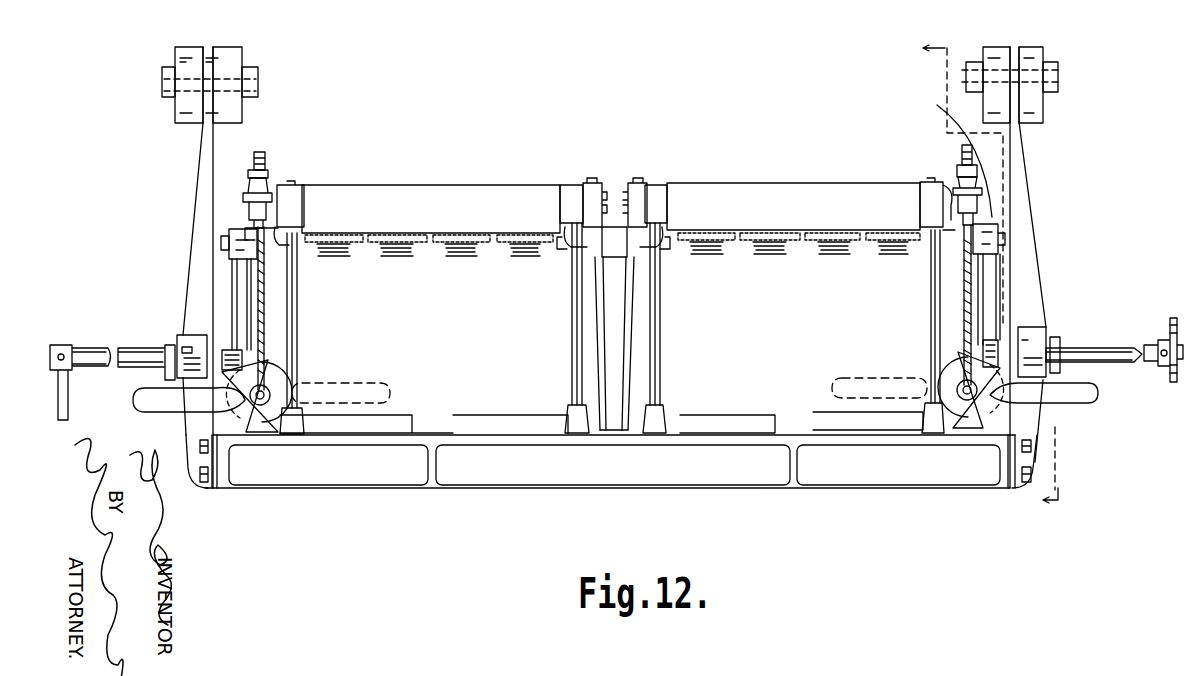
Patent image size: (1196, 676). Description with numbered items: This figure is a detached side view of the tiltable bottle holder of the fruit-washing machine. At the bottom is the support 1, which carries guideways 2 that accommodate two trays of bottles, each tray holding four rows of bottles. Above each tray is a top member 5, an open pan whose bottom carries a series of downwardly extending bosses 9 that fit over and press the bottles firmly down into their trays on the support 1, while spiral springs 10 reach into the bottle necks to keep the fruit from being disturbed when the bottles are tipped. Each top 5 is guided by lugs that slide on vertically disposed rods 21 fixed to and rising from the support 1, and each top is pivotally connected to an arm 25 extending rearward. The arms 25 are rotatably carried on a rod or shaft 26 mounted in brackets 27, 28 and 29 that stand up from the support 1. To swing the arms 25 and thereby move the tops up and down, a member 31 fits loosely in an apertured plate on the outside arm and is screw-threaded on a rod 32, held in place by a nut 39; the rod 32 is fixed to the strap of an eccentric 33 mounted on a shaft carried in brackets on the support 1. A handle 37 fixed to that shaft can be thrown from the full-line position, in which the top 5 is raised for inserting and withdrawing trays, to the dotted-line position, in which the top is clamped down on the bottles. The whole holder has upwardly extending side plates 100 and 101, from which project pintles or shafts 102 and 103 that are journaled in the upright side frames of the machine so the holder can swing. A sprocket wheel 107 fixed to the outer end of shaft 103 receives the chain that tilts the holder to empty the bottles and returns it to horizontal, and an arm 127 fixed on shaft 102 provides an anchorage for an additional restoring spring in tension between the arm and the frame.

The bottom or support 1 is at (836, 450).
The guideways 2 is at (497, 414).
The top member 5 is at (522, 203).
The bosses 9 is at (483, 243).
The spiral springs 10 is at (395, 262).
The vertically-disposed rods 21 is at (571, 322).
The arm 25 is at (590, 183).
The rod or shaft 26 is at (221, 240).
The bracket 27 is at (245, 228).
The bracket 28 is at (612, 227).
The bracket 29 is at (938, 106).
The member 31 is at (272, 184).
The rod 32 is at (264, 153).
The eccentric 33 is at (957, 373).
The handle 37 is at (153, 412).
The nut 39 is at (270, 174).
The side plate or frame member 100 is at (187, 276).
The side plate or frame member 101 is at (1045, 302).
The pintle or shaft 102 is at (127, 347).
The pintle or shaft 103 is at (1088, 343).
The sprocket wheel 107 is at (1170, 381).
The arm 127 is at (68, 397).